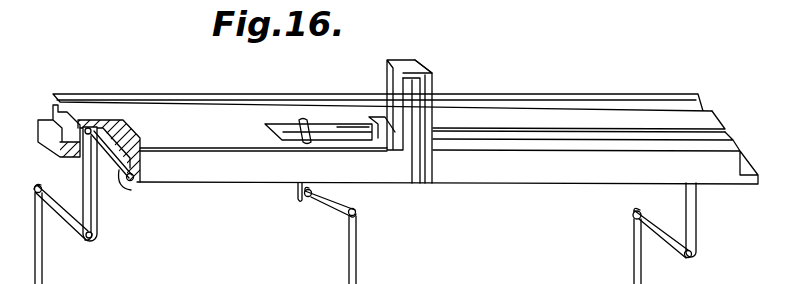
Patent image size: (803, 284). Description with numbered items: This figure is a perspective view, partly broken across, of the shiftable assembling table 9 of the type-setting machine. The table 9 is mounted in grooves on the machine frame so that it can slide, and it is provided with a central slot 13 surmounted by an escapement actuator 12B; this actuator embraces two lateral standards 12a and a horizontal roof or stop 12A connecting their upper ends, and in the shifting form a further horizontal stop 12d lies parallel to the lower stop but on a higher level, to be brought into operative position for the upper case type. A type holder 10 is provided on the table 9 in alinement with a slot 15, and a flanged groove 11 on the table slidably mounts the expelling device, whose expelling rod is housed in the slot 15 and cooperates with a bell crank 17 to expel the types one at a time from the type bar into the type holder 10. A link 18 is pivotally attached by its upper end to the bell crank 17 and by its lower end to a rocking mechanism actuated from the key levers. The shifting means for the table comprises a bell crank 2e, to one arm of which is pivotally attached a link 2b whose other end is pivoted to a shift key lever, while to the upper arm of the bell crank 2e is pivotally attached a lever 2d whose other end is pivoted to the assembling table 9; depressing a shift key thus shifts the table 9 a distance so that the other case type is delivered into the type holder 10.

The link 2b is at (45, 262).
The lever 2d is at (124, 189).
The bell crank 2e is at (97, 208).
The assembling table 9 is at (521, 103).
The type holder 10 is at (540, 134).
The flanged groove 11 is at (560, 107).
The horizontal roof or stop 12A is at (411, 63).
The escapement actuator 12B is at (393, 81).
The lateral standards 12a is at (433, 93).
The horizontal stop 12d is at (112, 192).
The central slot 13 is at (387, 168).
The slot 15 is at (266, 127).
The bell crank 17 is at (308, 120).
The link 18 is at (348, 254).